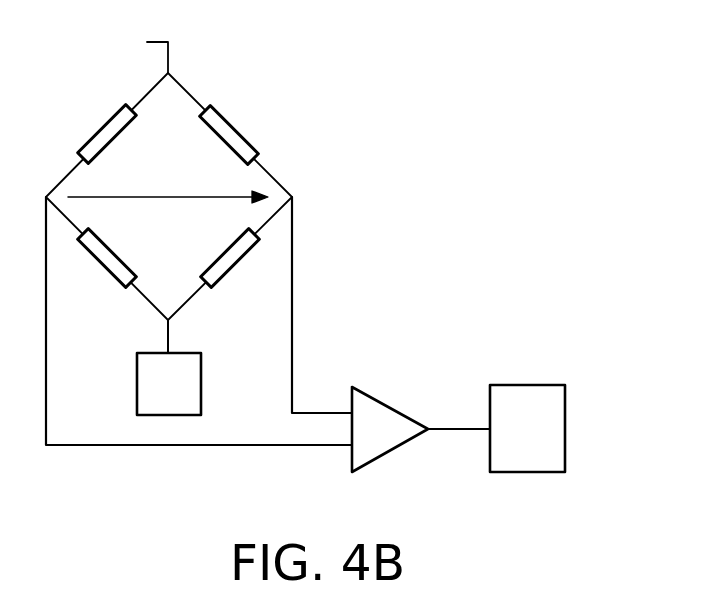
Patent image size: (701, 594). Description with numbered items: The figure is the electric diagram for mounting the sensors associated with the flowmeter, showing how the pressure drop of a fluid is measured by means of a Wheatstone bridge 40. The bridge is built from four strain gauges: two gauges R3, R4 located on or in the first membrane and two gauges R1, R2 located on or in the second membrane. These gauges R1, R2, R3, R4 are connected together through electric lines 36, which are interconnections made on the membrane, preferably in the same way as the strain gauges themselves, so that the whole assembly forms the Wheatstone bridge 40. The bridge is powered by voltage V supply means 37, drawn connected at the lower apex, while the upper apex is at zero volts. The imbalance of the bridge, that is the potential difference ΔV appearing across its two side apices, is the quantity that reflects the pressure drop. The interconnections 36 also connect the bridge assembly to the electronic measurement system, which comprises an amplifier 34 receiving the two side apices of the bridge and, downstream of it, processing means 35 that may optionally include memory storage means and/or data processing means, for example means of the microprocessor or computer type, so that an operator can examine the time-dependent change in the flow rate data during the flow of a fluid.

The Wheatstone bridge 40 is at (337, 139).
The electric lines 36 is at (190, 92).
The gauge R1 is at (237, 138).
The gauge R2 is at (230, 260).
The gauge R3 is at (117, 268).
The gauge R4 is at (107, 135).
The voltage supply means 37 is at (184, 392).
The amplifier 34 is at (380, 440).
The electronic measurement system 35 is at (557, 431).